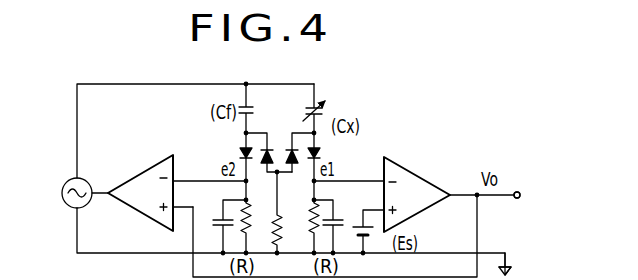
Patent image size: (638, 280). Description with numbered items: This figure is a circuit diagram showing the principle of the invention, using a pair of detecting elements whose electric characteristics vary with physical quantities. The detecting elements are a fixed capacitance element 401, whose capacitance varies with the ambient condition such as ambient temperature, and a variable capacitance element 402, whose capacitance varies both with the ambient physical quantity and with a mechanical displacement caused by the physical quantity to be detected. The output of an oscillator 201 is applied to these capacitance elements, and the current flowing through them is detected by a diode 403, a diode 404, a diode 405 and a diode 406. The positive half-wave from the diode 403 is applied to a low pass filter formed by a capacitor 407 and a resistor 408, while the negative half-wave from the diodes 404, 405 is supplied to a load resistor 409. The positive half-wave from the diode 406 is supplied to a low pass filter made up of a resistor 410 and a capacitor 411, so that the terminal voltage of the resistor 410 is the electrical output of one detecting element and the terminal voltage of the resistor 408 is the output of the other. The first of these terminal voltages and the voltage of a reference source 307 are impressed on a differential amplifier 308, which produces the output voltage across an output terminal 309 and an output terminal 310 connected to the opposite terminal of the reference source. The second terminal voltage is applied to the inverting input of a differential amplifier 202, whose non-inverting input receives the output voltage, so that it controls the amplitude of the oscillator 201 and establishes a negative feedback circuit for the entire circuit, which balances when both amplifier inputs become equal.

The oscillator 201 is at (85, 181).
The differential amplifier 202 is at (140, 193).
The reference source 307 is at (367, 234).
The differential amplifier 308 is at (417, 194).
The output terminal 309 is at (530, 195).
The output terminal 310 is at (517, 261).
The fixed capacitance element 401 is at (258, 108).
The variable capacitance element 402 is at (327, 108).
The diode 403 is at (233, 157).
The diode 404 is at (270, 148).
The diode 405 is at (291, 164).
The diode 406 is at (326, 157).
The capacitor 407 is at (219, 224).
The resistor 408 is at (250, 226).
The load resistor 409 is at (283, 238).
The resistor 410 is at (312, 244).
The capacitor 411 is at (335, 227).